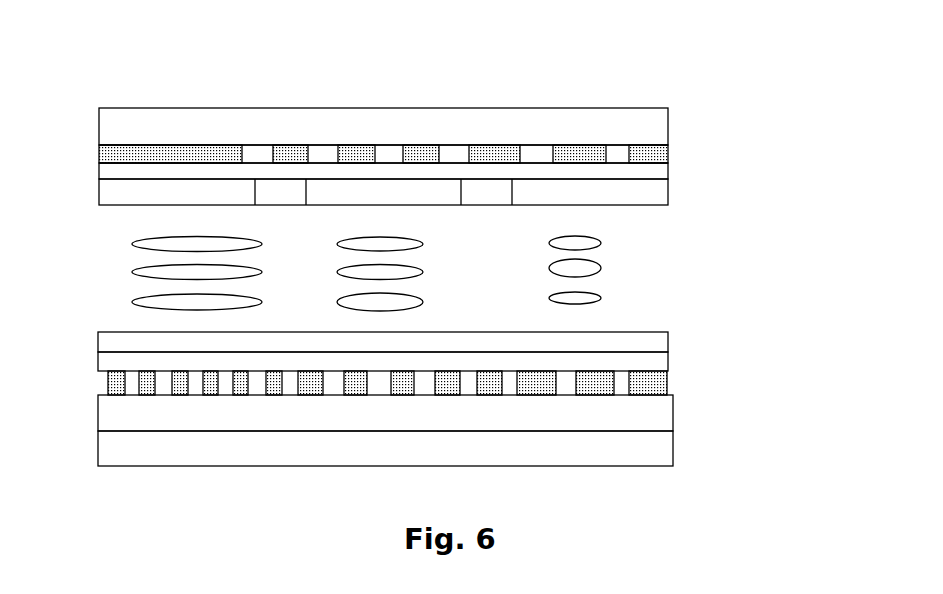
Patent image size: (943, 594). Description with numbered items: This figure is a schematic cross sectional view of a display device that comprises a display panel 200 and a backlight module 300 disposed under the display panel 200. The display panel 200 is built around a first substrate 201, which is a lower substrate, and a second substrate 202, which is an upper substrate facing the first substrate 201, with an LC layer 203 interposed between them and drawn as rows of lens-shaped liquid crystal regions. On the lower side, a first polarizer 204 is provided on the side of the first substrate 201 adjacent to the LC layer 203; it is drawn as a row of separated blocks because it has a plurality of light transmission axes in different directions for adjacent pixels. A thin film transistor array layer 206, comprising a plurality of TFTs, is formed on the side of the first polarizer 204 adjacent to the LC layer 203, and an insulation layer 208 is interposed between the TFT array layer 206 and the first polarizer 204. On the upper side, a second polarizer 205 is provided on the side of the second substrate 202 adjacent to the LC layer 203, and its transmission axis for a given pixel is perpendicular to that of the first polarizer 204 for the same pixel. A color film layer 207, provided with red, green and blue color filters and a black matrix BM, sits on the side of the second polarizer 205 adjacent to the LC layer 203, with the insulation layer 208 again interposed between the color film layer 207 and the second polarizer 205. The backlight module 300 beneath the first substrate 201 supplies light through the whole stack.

The display panel 200 is at (149, 75).
The second substrate 202 is at (658, 119).
The second polarizer 205 is at (667, 152).
The insulation layer 208 is at (672, 172).
The color film layer 207 is at (672, 197).
The LC layer 203 is at (656, 255).
The thin film transistor array layer 206 is at (668, 334).
The first polarizer 204 is at (668, 383).
The first substrate 201 is at (673, 415).
The backlight module 300 is at (673, 447).